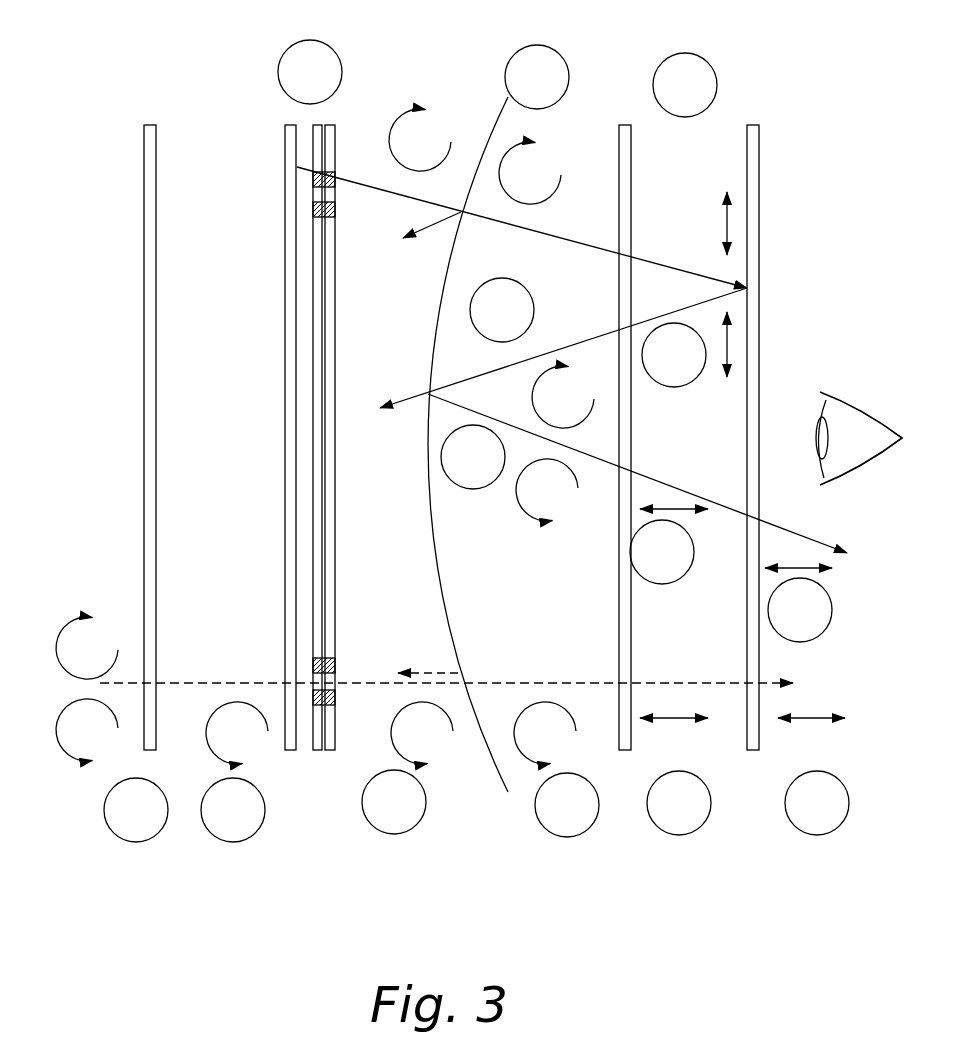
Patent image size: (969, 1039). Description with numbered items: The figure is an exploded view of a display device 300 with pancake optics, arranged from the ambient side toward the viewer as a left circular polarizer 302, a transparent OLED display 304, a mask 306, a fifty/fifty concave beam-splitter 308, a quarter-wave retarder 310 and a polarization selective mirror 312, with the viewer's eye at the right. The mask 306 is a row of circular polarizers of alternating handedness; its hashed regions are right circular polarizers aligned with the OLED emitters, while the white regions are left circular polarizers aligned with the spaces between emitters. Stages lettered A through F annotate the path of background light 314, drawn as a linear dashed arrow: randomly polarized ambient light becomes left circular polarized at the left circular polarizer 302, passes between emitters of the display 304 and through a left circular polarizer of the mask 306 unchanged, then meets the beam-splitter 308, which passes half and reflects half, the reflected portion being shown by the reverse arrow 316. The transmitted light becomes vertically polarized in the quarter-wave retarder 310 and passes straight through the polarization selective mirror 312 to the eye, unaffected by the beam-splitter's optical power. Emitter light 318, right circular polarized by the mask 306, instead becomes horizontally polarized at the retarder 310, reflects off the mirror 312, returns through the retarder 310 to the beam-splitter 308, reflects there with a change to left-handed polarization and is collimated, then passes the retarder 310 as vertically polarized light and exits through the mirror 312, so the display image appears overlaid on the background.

The display device 300 is at (118, 90).
The left circular polarizer 302 is at (156, 178).
The transparent OLED display 304 is at (285, 248).
The mask 306 is at (337, 303).
The 50/50 concave beam-splitter 308 is at (427, 503).
The quarter-wave retarder 310 is at (631, 175).
The polarization selective mirror 312 is at (759, 175).
The background light ray 314 is at (194, 680).
The reverse arrow 316 is at (437, 672).
The light ray from emitter 318 is at (377, 190).